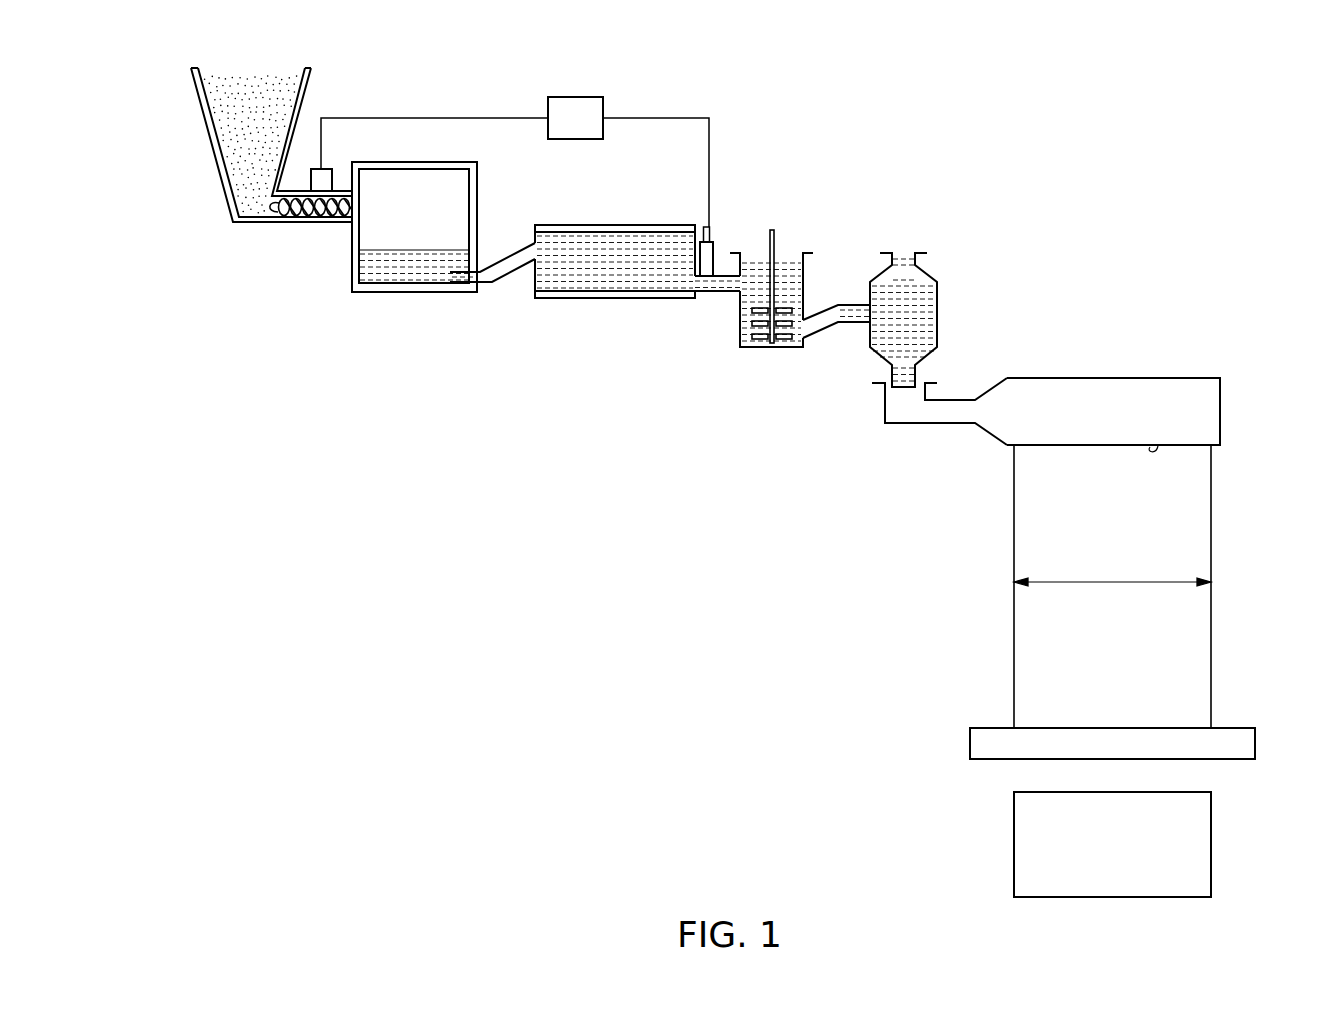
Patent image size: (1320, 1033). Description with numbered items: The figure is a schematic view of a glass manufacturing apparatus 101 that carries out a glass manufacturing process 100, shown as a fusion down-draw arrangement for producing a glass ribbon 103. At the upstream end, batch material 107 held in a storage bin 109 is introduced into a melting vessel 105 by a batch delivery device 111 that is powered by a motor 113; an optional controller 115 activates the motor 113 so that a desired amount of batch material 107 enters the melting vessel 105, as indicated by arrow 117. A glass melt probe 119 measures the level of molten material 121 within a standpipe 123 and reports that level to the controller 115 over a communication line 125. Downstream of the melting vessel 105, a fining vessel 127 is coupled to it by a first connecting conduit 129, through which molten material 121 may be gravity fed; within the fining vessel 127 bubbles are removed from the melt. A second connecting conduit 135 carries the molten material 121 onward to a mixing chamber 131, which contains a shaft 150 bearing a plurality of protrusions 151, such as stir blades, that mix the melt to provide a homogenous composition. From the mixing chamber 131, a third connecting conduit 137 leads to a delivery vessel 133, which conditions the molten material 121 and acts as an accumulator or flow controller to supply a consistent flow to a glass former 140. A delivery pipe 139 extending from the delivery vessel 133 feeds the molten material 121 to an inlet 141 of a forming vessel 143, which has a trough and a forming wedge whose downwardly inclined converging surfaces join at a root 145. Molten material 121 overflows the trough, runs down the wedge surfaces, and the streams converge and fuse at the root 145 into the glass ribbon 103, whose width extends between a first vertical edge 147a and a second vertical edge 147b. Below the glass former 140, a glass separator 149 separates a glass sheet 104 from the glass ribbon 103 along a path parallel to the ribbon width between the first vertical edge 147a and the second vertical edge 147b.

The glass manufacturing process 100 is at (1133, 183).
The glass manufacturing apparatus 101 is at (943, 173).
The glass ribbon 103 is at (1118, 563).
The glass sheet 104 is at (1212, 843).
The melting vessel 105 is at (395, 315).
The batch material 107 is at (249, 69).
The storage bin 109 is at (210, 153).
The batch delivery device 111 is at (299, 218).
The motor 113 is at (327, 169).
The controller 115 is at (574, 96).
The arrow 117 is at (414, 210).
The glass melt probe 119 is at (702, 228).
The molten material 121 is at (414, 239).
The standpipe 123 is at (806, 297).
The communication line 125 is at (652, 117).
The fining vessel 127 is at (606, 225).
The first connecting conduit 129 is at (509, 250).
The mixing chamber 131 is at (805, 275).
The delivery vessel 133 is at (937, 321).
The second connecting conduit 135 is at (718, 298).
The third connecting conduit 137 is at (817, 339).
The delivery pipe 139 is at (918, 378).
The glass former 140 is at (1155, 347).
The inlet 141 is at (884, 398).
The forming vessel 143 is at (1108, 389).
The root 145 is at (1158, 446).
The first vertical edge 147a is at (1013, 528).
The second vertical edge 147b is at (1212, 528).
The glass separator 149 is at (1256, 743).
The shaft 150 is at (776, 238).
The protrusions 151 is at (760, 338).